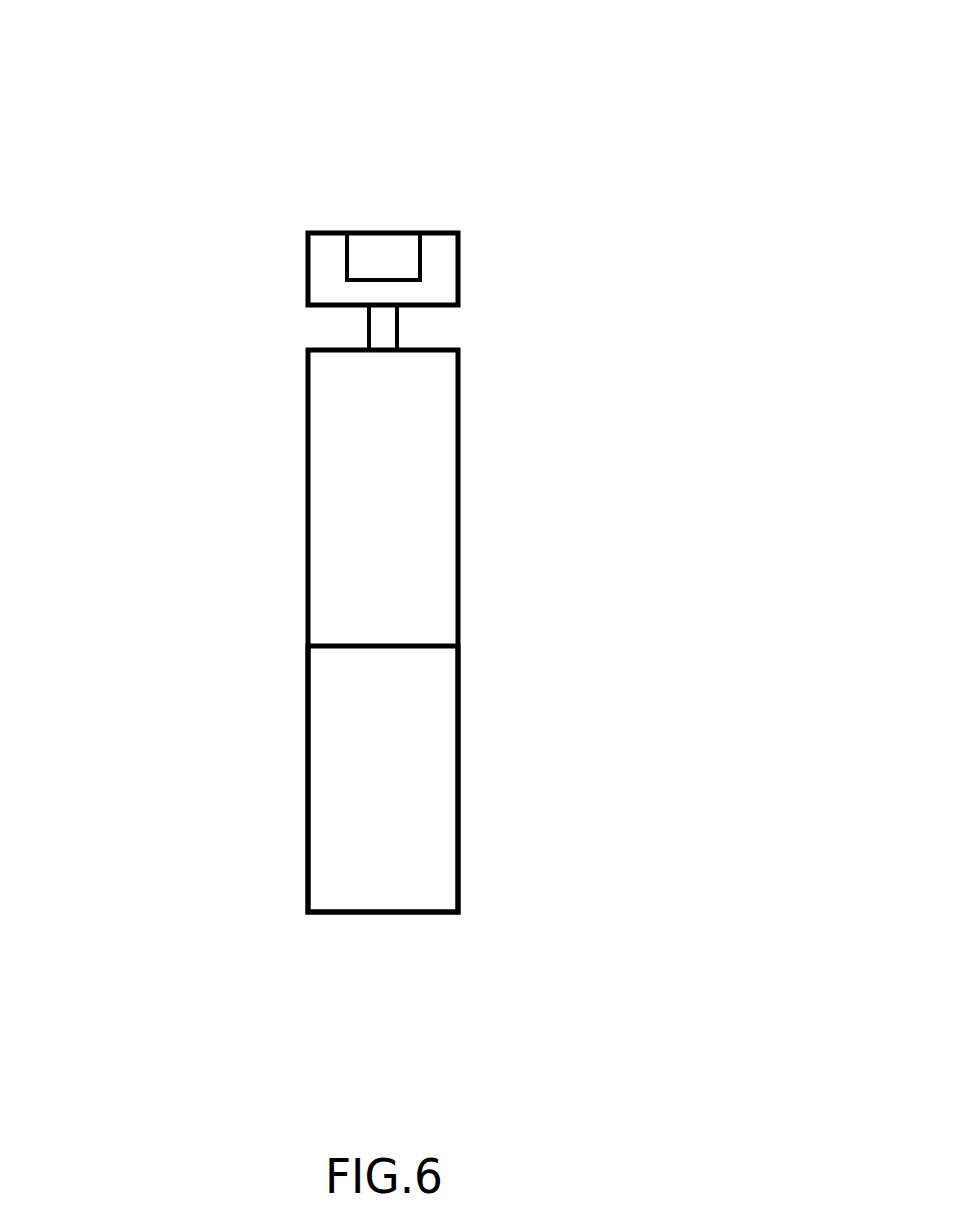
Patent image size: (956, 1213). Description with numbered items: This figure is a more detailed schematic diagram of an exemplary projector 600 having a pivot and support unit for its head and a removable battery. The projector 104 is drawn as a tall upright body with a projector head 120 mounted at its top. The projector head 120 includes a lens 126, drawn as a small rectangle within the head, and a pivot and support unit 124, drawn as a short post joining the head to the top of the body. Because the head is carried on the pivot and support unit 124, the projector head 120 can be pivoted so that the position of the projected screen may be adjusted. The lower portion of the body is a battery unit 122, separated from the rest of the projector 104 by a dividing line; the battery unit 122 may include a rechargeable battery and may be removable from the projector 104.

The projector 600 is at (694, 141).
The projector head 120 is at (308, 290).
The lens 126 is at (422, 245).
The pivot and support unit 124 is at (400, 340).
The projector 104 is at (308, 497).
The battery unit 122 is at (308, 735).